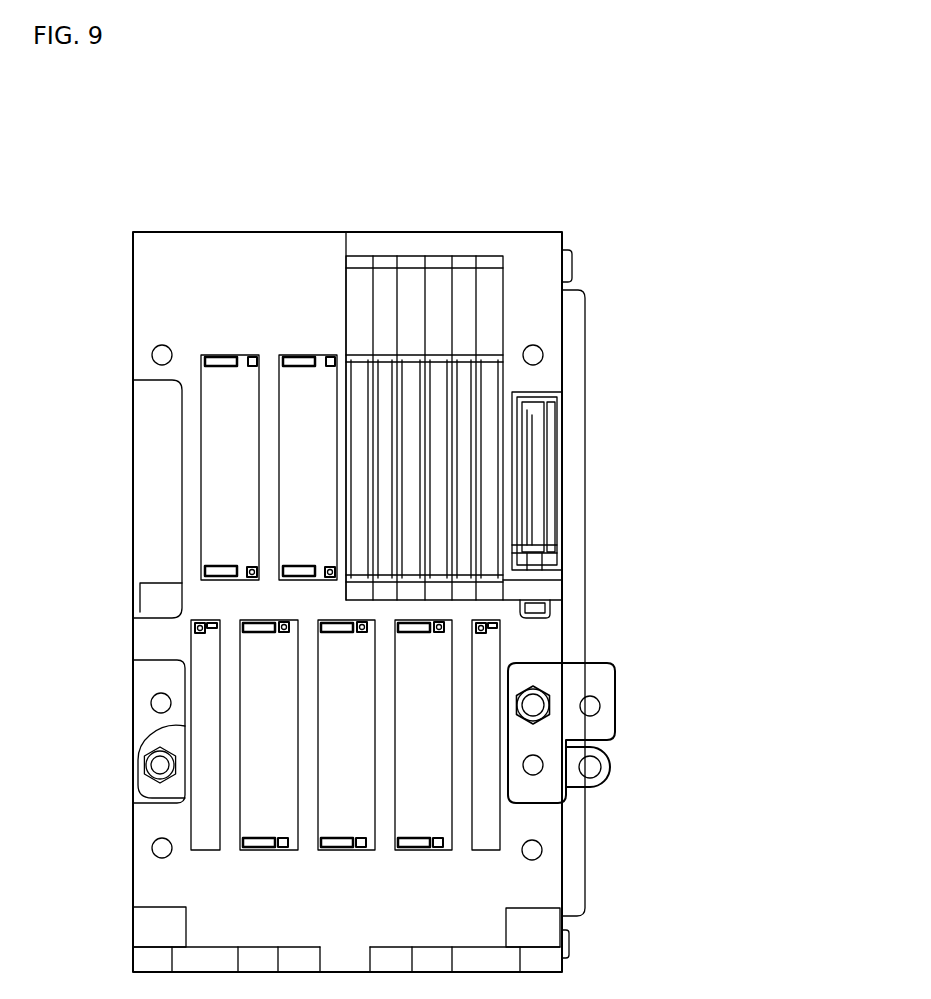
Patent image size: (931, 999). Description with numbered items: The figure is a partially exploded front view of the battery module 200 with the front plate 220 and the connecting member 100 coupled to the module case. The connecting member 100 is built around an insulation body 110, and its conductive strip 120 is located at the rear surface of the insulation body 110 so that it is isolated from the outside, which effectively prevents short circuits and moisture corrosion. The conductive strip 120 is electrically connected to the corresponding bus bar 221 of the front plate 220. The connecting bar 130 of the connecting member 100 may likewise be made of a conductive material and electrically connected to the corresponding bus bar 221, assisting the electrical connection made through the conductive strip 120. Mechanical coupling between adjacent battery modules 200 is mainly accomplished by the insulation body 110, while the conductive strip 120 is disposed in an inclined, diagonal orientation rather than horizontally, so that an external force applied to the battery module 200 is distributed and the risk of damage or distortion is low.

The connecting member 100 is at (670, 702).
The insulation body 110 is at (610, 712).
The conductive strip 120 is at (610, 770).
The connecting bar 130 is at (536, 702).
The battery module 200 is at (359, 602).
The front plate 220 is at (313, 232).
The bus bar 221 is at (228, 482).